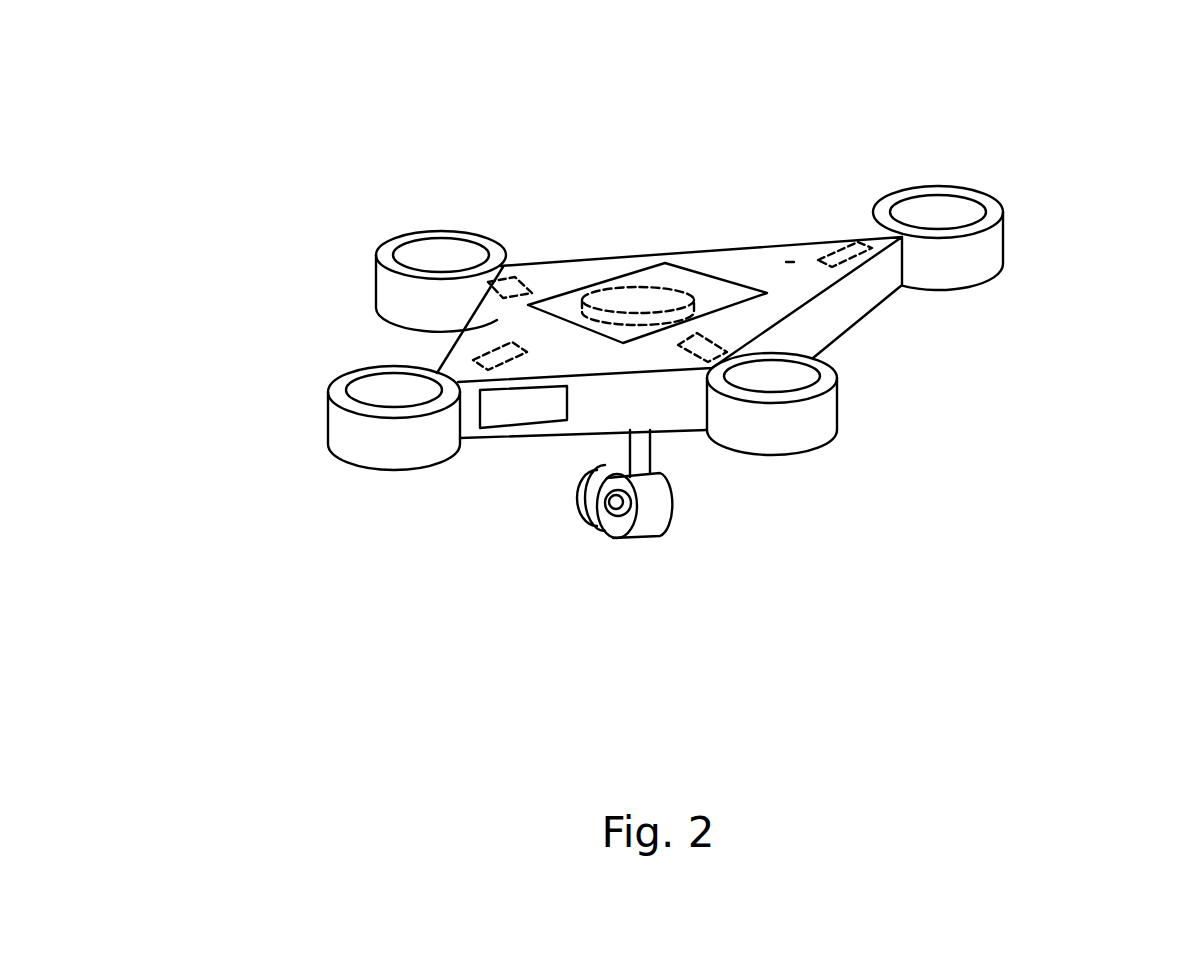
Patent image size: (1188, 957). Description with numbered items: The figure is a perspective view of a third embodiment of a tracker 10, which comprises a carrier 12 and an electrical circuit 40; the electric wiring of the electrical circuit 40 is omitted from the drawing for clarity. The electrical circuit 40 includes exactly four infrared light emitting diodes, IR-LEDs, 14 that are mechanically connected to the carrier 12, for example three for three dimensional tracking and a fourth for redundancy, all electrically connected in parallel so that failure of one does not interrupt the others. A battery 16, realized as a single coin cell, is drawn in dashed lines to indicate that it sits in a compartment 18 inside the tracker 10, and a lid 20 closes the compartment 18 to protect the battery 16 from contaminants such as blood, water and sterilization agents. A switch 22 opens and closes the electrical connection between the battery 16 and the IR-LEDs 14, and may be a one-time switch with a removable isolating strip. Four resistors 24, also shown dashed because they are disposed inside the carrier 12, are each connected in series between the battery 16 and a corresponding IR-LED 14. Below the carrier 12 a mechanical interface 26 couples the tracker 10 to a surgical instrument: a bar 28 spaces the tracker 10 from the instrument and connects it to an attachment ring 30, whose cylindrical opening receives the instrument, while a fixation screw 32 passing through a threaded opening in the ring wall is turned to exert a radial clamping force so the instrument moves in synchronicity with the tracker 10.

The tracker 10 is at (250, 148).
The carrier 12 is at (713, 257).
The infrared light emitting diodes 14 is at (435, 253).
The battery 16 is at (637, 297).
The compartment 18 is at (622, 273).
The lid 20 is at (572, 302).
The switch 22 is at (497, 408).
The resistors 24 is at (503, 285).
The mechanical interface 26 is at (665, 576).
The bar 28 is at (647, 450).
The attachment ring 30 is at (657, 508).
The fixation screw 32 is at (578, 508).
The electrical circuit 40 is at (790, 262).